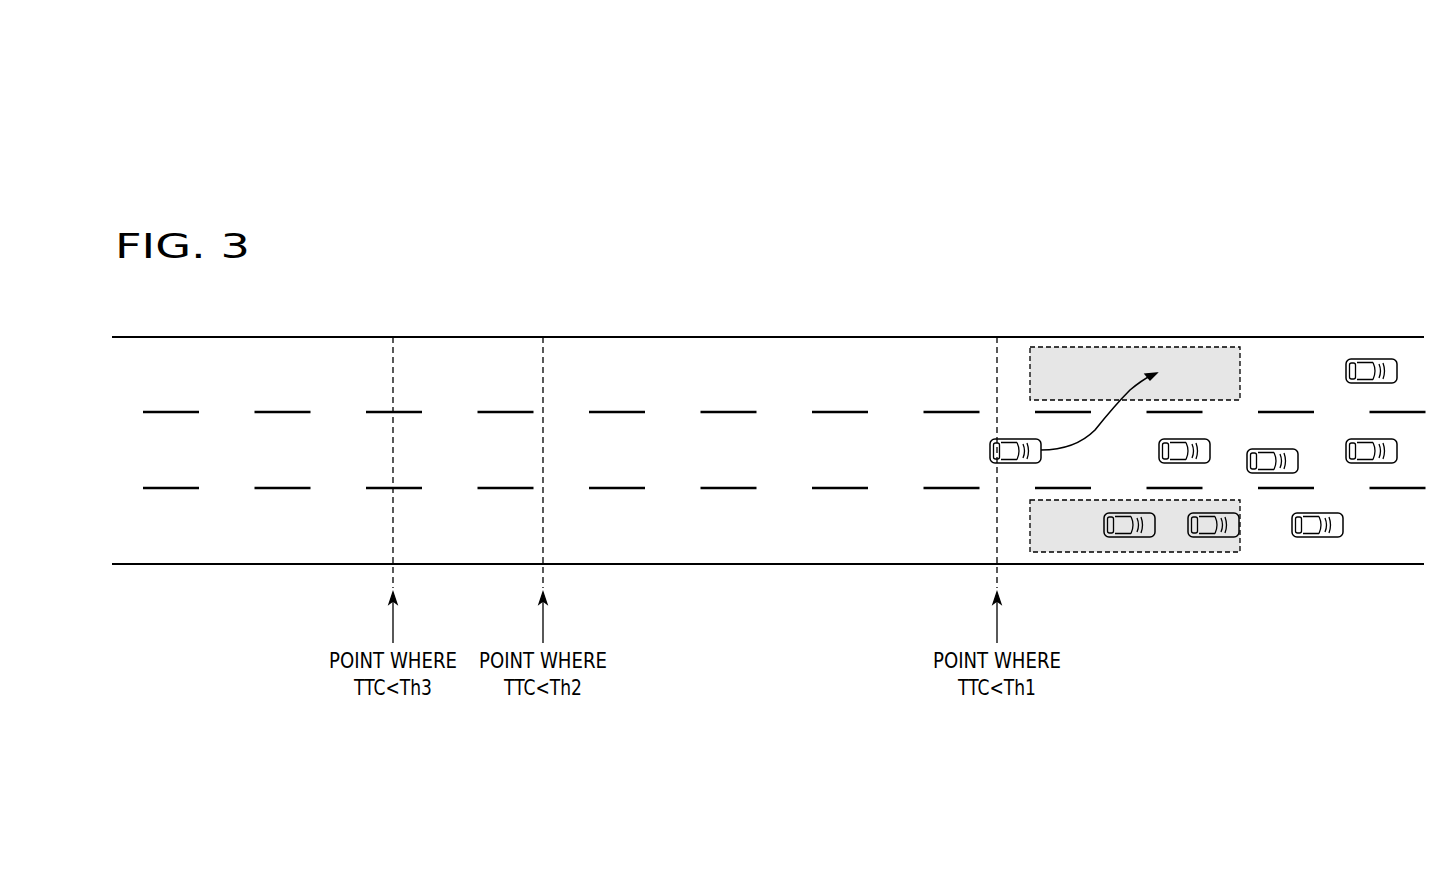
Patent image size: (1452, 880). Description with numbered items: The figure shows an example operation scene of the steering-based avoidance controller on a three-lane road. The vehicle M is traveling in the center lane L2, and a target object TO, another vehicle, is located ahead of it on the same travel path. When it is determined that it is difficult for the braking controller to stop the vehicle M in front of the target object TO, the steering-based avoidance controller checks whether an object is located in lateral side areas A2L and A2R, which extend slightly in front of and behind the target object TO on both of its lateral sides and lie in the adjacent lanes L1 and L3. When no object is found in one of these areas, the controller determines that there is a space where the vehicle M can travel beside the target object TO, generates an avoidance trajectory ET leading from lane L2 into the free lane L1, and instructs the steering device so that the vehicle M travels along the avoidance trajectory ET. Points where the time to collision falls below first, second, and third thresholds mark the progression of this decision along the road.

The vehicle M is at (990, 450).
The target object TO is at (1183, 440).
The avoidance trajectory ET is at (1092, 432).
The lateral side area A2L is at (1076, 355).
The lateral side area A2R is at (1076, 542).
The lane L1 is at (142, 389).
The lane L2 is at (142, 465).
The lane L3 is at (142, 541).